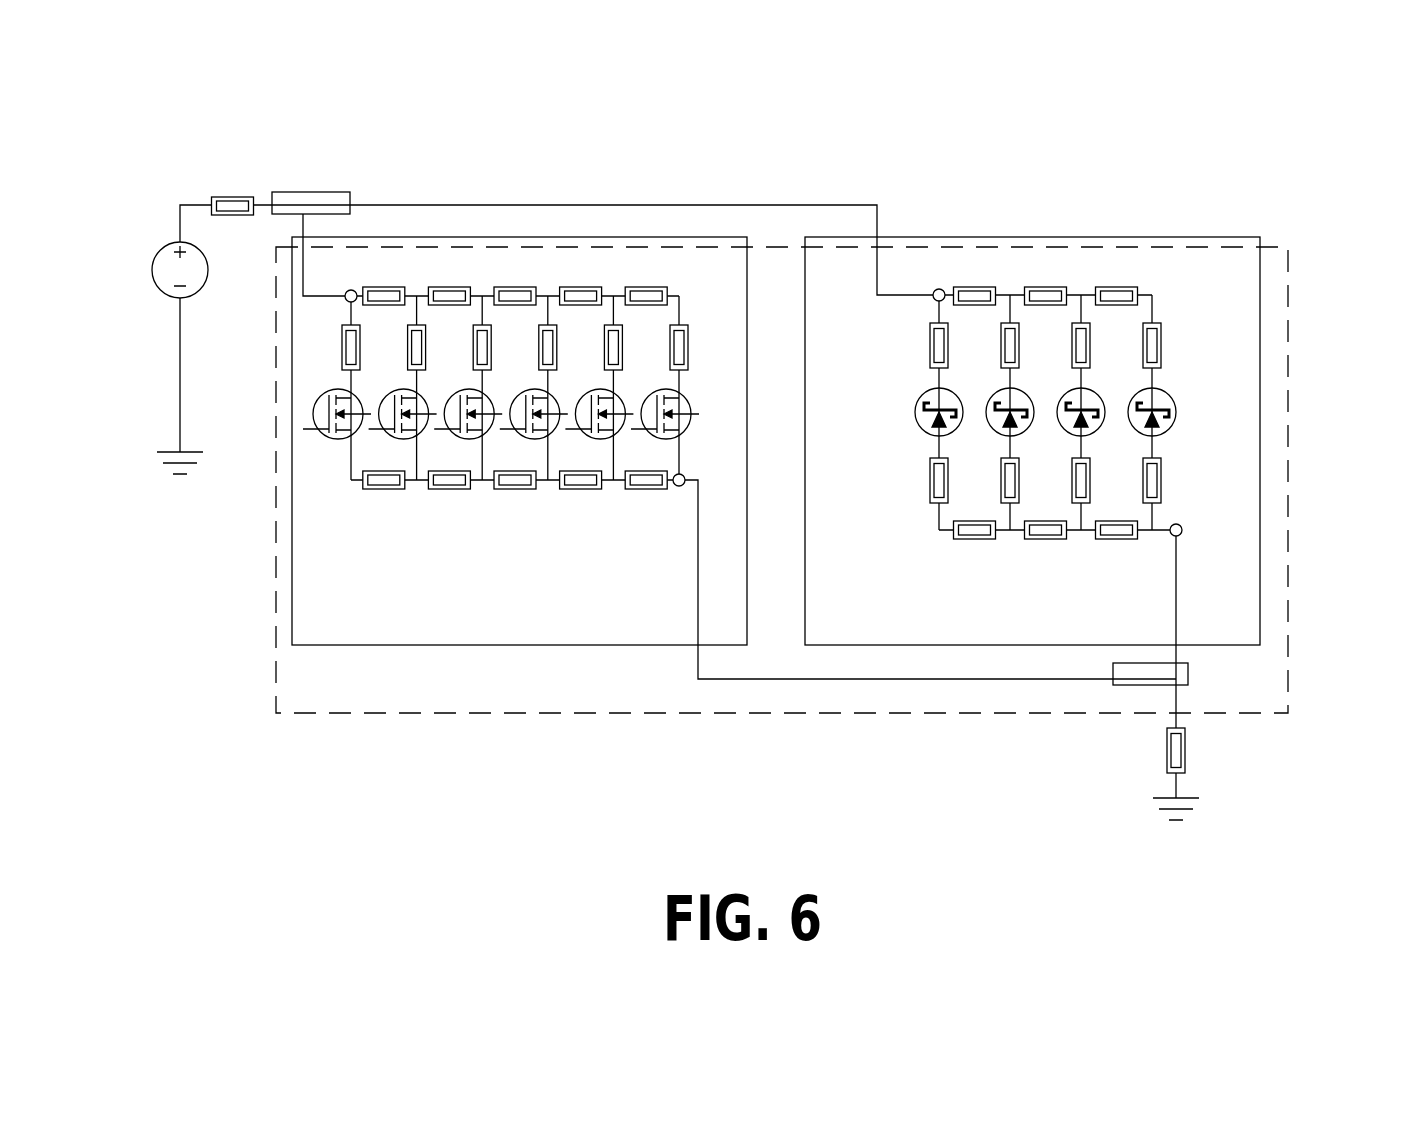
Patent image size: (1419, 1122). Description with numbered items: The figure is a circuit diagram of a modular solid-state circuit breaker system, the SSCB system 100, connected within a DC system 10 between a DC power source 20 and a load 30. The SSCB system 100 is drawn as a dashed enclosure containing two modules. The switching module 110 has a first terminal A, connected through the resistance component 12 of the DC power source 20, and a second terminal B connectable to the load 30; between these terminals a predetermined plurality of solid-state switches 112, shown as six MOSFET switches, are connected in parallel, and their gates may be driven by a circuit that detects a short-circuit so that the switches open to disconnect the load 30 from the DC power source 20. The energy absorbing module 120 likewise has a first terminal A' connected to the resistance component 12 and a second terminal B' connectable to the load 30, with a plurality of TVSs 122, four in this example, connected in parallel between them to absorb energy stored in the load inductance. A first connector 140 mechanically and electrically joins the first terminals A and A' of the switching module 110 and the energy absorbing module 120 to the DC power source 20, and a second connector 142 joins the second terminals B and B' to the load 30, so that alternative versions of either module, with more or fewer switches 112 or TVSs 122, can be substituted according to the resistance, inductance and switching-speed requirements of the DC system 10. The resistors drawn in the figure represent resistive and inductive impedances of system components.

The DC system 10 is at (205, 98).
The resistance component 12 is at (255, 196).
The DC power source 20 is at (158, 255).
The load 30 is at (1167, 753).
The modular SSCB system 100 is at (993, 217).
The switching module 110 is at (315, 557).
The solid-state switches 112 is at (286, 369).
The energy absorbing module 120 is at (1233, 505).
The TVSs 122 is at (873, 408).
The first connector 140 is at (350, 192).
The second connector 142 is at (1188, 685).